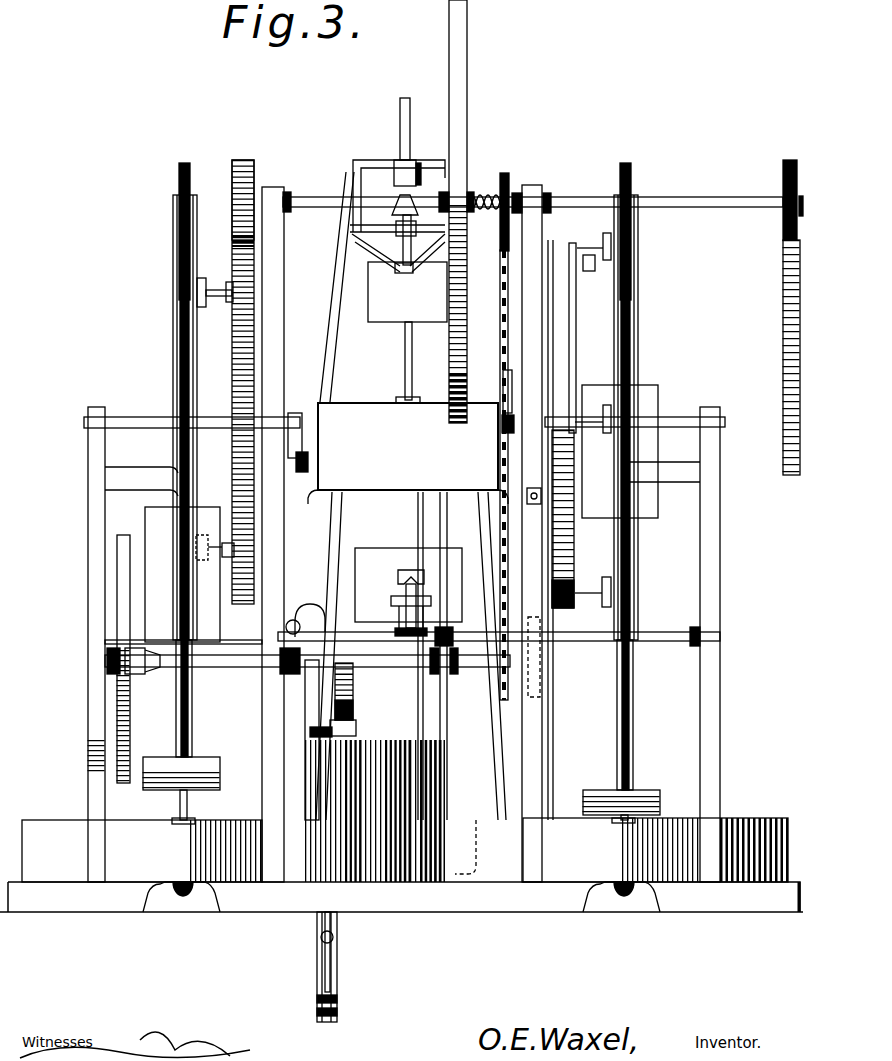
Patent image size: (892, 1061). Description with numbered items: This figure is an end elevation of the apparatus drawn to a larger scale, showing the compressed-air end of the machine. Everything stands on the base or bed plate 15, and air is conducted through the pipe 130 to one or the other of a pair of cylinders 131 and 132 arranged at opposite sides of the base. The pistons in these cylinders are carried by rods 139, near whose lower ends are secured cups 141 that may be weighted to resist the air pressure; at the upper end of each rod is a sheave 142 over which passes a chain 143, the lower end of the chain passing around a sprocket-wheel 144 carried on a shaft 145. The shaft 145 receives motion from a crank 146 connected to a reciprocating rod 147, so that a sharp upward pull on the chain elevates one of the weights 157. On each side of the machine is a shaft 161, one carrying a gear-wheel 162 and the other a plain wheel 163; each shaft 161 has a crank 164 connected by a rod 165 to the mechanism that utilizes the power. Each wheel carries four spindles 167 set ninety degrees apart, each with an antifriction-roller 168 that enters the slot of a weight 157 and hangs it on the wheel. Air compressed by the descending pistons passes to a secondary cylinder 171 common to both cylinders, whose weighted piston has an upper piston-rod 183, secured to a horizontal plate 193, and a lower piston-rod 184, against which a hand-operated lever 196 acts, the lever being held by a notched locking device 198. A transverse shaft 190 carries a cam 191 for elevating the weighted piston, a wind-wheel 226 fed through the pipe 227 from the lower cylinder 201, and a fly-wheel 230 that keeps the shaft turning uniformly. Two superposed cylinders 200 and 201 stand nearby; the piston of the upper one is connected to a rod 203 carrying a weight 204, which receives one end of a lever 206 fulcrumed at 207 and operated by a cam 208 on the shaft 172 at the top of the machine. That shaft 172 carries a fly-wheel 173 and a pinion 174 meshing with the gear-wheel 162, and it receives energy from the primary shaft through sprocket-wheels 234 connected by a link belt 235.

The base or bed plate 15 is at (390, 912).
The pipe 130 is at (183, 905).
The cylinder 131 is at (142, 851).
The cylinder 132 is at (655, 850).
The piston rod 139 is at (182, 797).
The cup 141 is at (212, 762).
The sheave 142 is at (179, 172).
The chain 143 is at (178, 318).
The sprocket wheel 144 is at (192, 708).
The shaft 145 is at (577, 641).
The crank 146 is at (393, 612).
The connecting rod 147 is at (418, 600).
The weight 157 is at (646, 518).
The shaft 161 is at (143, 416).
The gear wheel 162 is at (233, 382).
The plain wheel 163 is at (573, 346).
The crank 164 is at (296, 412).
The rod 165 is at (310, 462).
The spindle 167 is at (217, 280).
The antifriction roller 168 is at (197, 290).
The secondary cylinder 171 is at (284, 745).
The shaft 172 is at (312, 195).
The fly wheel 173 is at (467, 115).
The pinion 174 is at (244, 160).
The upper piston rod 183 is at (312, 603).
The lower piston rod 184 is at (316, 933).
The shaft 190 is at (205, 660).
The cam 191 is at (290, 668).
The bar or plate 193 is at (291, 620).
The hand-operated lever 196 is at (323, 950).
The locking device 198 is at (340, 970).
The upper cylinder 200 is at (403, 480).
The lower cylinder 201 is at (402, 546).
The piston rod 203 is at (404, 345).
The weight 204 is at (407, 292).
The lever 206 is at (396, 268).
The fulcrum 207 is at (350, 226).
The cam 208 is at (357, 185).
The wind wheel 226 is at (355, 712).
The pipe 227 is at (353, 683).
The fly wheel 230 is at (117, 592).
The sprocket wheel 234 is at (504, 175).
The link belt 235 is at (500, 309).